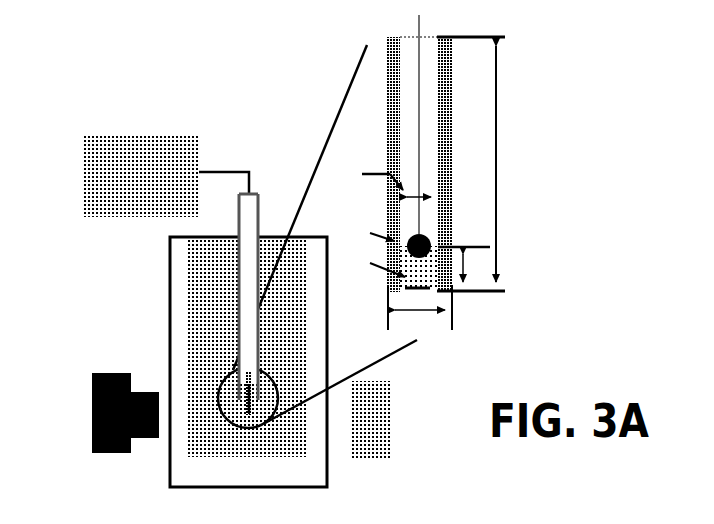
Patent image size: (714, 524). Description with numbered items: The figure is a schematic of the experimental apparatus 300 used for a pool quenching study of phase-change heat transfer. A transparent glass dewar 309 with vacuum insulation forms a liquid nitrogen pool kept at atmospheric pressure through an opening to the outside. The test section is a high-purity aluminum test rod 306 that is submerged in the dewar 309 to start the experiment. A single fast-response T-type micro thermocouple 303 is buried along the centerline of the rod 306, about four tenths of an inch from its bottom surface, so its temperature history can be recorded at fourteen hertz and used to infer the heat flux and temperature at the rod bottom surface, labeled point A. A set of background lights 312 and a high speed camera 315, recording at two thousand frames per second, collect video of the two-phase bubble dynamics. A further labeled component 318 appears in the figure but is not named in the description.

The experimental apparatus 300 is at (205, 68).
The data acquisition system (DAQ) 318 is at (82, 178).
The transparent glass dewar 309 is at (170, 338).
The background lights 312 is at (92, 395).
The high speed camera 315 is at (392, 436).
The test rod 306 is at (452, 166).
The thermocouple 303 is at (427, 240).